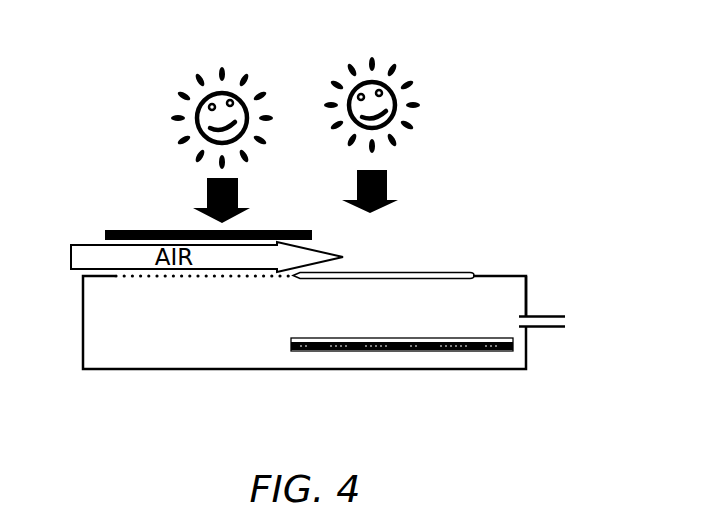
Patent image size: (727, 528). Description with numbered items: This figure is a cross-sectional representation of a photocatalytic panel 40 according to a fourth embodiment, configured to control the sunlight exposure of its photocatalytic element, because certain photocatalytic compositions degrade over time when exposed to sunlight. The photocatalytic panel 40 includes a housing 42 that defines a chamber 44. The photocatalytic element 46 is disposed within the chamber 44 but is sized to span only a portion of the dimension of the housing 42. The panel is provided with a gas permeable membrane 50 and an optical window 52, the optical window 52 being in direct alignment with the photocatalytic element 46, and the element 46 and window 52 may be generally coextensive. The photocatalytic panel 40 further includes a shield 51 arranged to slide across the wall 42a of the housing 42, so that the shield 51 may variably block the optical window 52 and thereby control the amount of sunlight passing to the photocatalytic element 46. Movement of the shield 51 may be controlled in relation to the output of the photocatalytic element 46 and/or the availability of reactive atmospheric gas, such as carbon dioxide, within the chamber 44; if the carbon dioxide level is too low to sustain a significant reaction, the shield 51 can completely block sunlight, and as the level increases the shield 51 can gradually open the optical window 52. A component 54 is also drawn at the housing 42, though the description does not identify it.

The photocatalytic panel 40 is at (511, 369).
The housing 42 is at (527, 348).
The wall of the housing 42a is at (512, 272).
The chamber 44 is at (208, 335).
The photocatalytic element 46 is at (395, 339).
The gas permeable membrane 50 is at (147, 277).
The shield 51 is at (103, 233).
The optical window 52 is at (400, 271).
The capacitor / electrical connector 54 is at (547, 315).